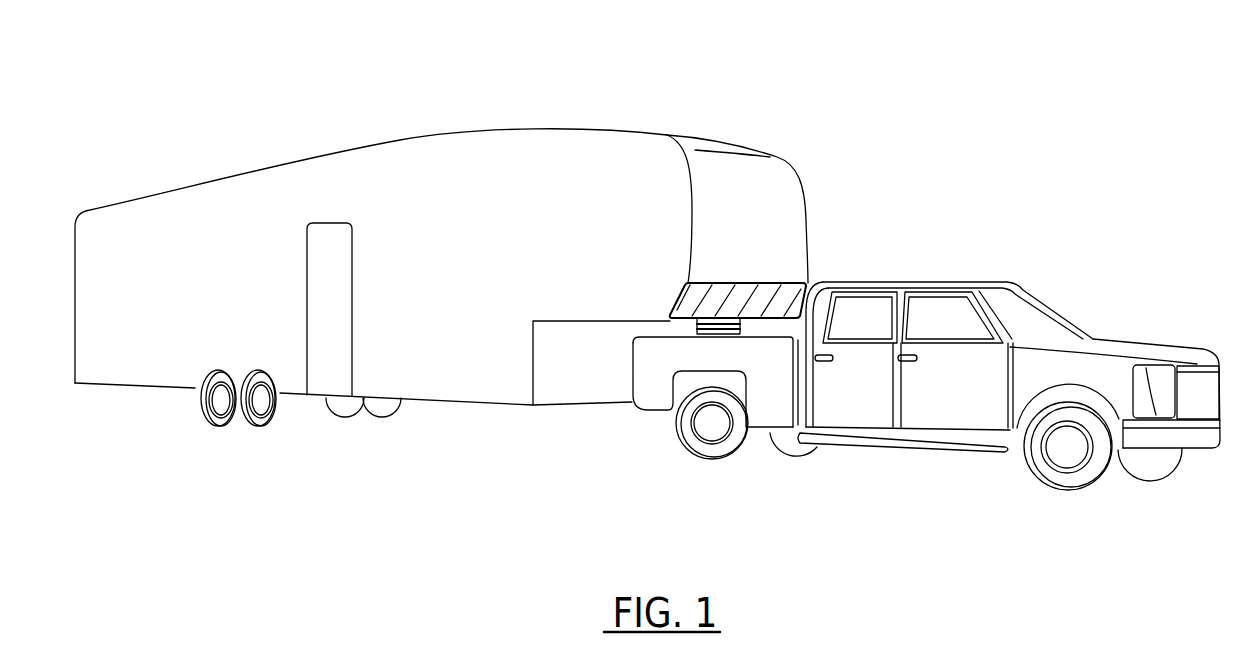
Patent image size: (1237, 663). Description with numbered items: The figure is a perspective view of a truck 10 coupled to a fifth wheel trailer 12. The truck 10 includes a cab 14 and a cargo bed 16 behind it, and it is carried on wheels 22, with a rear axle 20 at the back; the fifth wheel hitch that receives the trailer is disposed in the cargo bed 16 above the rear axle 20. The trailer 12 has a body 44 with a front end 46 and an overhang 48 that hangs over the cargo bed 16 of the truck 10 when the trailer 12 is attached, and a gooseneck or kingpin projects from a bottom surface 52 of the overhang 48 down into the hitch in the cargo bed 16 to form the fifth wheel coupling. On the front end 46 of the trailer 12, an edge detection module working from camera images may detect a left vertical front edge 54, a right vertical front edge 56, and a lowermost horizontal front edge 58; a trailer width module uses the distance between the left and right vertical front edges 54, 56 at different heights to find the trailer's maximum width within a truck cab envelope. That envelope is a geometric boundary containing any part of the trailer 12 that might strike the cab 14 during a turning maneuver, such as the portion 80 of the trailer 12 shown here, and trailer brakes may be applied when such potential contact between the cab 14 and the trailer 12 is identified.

The truck 10 is at (647, 292).
The fifth wheel trailer 12 is at (476, 257).
The cab 14 is at (930, 397).
The cargo bed 16 is at (777, 400).
The rear axle 20 is at (763, 433).
The wheels 22 is at (642, 438).
The body 44 is at (413, 437).
The front end 46 is at (775, 195).
The overhang 48 is at (658, 177).
The bottom surface 52 is at (613, 321).
The left vertical front edge 54 is at (807, 287).
The right vertical front edge 56 is at (714, 282).
The lowermost horizontal front edge 58 is at (708, 318).
The portion of the trailer 80 is at (745, 307).